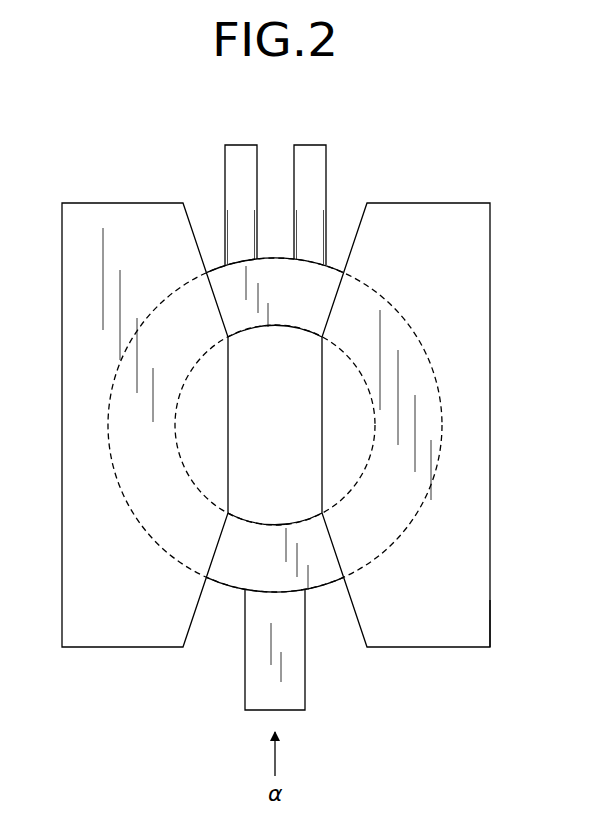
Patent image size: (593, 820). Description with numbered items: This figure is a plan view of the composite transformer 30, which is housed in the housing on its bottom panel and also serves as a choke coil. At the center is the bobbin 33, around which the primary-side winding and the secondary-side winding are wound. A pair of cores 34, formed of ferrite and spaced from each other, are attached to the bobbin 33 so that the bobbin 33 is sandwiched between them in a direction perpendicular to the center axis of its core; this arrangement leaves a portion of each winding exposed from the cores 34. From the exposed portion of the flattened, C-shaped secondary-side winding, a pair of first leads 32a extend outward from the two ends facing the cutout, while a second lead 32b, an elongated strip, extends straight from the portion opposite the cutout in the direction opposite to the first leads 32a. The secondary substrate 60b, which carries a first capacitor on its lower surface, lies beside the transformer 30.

The transformer 30 is at (490, 160).
The first leads 32a is at (306, 143).
The second lead 32b is at (306, 701).
The bobbin 33 is at (226, 597).
The cores 34 is at (62, 232).
The secondary substrate 60b is at (511, 623).